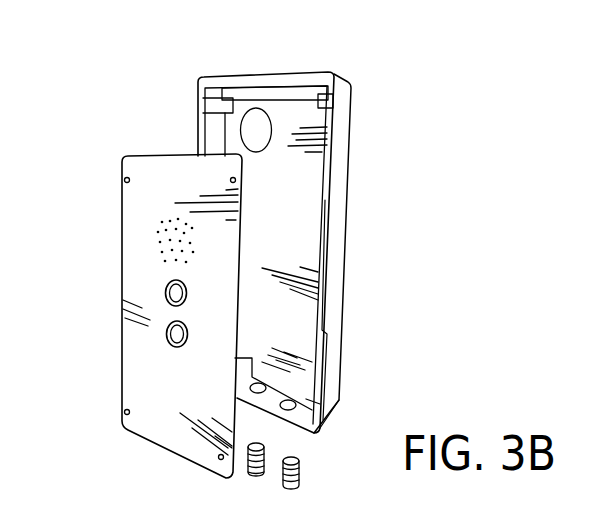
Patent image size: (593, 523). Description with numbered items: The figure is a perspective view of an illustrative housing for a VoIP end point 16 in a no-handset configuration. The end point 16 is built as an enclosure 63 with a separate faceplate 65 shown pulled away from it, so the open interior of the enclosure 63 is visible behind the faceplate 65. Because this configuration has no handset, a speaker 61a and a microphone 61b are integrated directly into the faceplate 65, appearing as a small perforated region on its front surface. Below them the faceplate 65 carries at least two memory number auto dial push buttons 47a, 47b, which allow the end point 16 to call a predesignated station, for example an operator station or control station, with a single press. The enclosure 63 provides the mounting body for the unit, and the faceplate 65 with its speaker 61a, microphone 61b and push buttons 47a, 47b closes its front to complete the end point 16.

The end point 16 is at (390, 104).
The enclosure 63 is at (262, 77).
The faceplate 65 is at (158, 180).
The speaker 61a is at (106, 241).
The microphone 61b is at (155, 234).
The memory number auto dial push button 47a is at (166, 291).
The memory number auto dial push button 47b is at (166, 337).